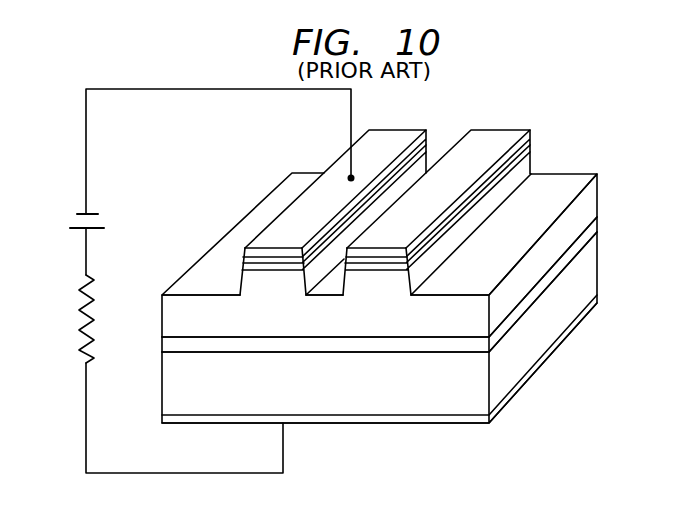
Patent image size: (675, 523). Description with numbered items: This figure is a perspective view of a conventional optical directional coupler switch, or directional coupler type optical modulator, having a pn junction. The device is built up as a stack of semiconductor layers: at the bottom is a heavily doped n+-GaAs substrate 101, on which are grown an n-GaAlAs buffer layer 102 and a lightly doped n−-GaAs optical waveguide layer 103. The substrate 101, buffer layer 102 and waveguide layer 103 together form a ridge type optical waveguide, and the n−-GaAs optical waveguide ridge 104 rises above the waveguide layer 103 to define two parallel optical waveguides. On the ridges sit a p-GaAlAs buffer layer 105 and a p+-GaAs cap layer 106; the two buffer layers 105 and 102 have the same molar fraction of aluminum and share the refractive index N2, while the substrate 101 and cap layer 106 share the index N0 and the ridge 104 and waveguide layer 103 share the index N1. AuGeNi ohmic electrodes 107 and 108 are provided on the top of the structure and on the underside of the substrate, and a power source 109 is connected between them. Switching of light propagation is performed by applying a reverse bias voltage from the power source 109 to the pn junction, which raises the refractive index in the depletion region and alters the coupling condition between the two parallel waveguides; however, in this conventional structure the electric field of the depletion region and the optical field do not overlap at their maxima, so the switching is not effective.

The n+-GaAs substrate 101 is at (489, 380).
The n-Ga1-xAlxAs buffer layer 102 is at (489, 342).
The n−-GaAs optical waveguide layer 103 is at (489, 312).
The n−-GaAs optical waveguide ridge 104 is at (532, 163).
The p-Ga1-yAlyAs buffer layer 105 is at (532, 148).
The p+-GaAs cap layer 106 is at (532, 137).
The AuGeNi ohmic electrode 107 is at (490, 128).
The AuGeNi ohmic electrode 108 is at (425, 424).
The power source 109 is at (75, 229).